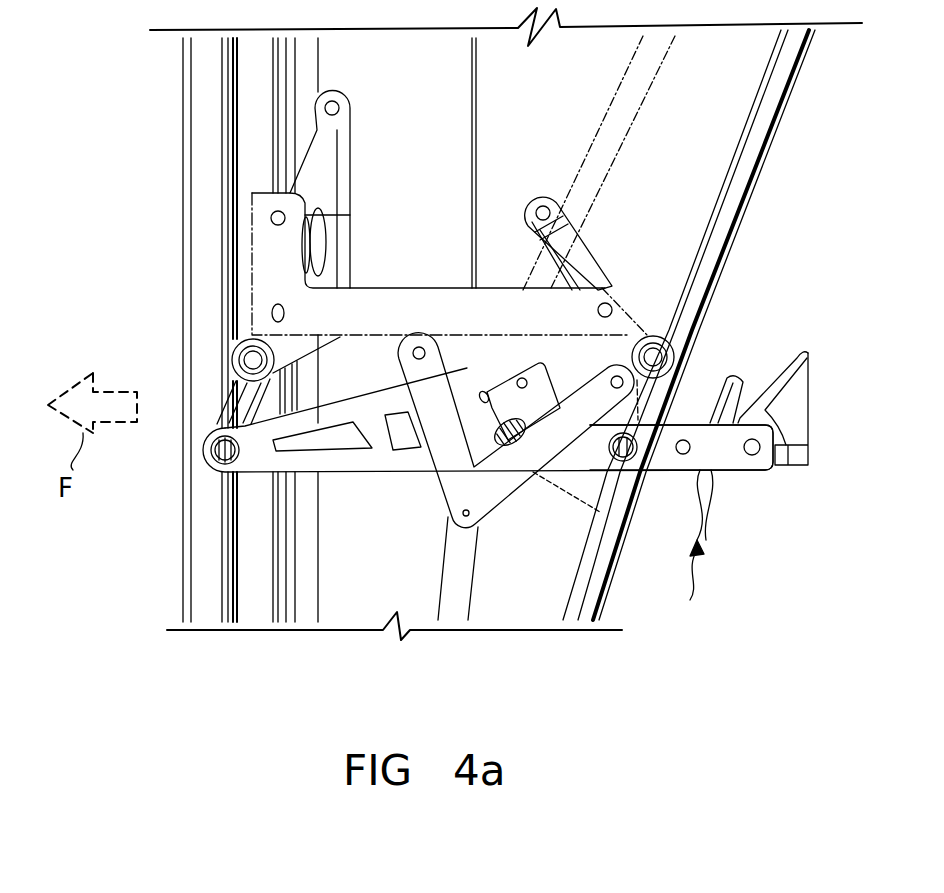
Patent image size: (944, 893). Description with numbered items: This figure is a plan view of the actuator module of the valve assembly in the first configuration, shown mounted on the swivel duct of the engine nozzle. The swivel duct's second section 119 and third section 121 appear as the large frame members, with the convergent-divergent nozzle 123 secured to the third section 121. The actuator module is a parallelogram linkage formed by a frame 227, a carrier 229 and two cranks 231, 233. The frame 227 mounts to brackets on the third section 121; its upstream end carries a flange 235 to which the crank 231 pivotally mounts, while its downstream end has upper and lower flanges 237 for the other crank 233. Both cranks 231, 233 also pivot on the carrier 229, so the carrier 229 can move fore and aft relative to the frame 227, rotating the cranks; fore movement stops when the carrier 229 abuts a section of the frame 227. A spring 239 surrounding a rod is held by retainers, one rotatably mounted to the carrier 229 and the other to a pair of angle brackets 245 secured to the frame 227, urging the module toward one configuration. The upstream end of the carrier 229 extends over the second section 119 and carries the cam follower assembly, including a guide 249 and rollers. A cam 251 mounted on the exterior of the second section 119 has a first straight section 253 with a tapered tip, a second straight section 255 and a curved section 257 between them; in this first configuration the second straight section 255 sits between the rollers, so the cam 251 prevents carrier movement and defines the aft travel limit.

The second section 119 is at (880, 178).
The third section 121 is at (397, 50).
The convergent-divergent nozzle 123 is at (162, 110).
The frame 227 is at (398, 307).
The carrier 229 is at (383, 460).
The crank 231 is at (233, 397).
The crank 233 is at (637, 318).
The flange 235 is at (603, 340).
The upper and lower flanges 237 is at (246, 338).
The spring 239 is at (537, 436).
The angle brackets 245 is at (500, 492).
The guide 249 is at (802, 413).
The cam 251 is at (700, 599).
The first straight section 253 is at (710, 537).
The second straight section 255 is at (742, 372).
The curved section 257 is at (716, 470).